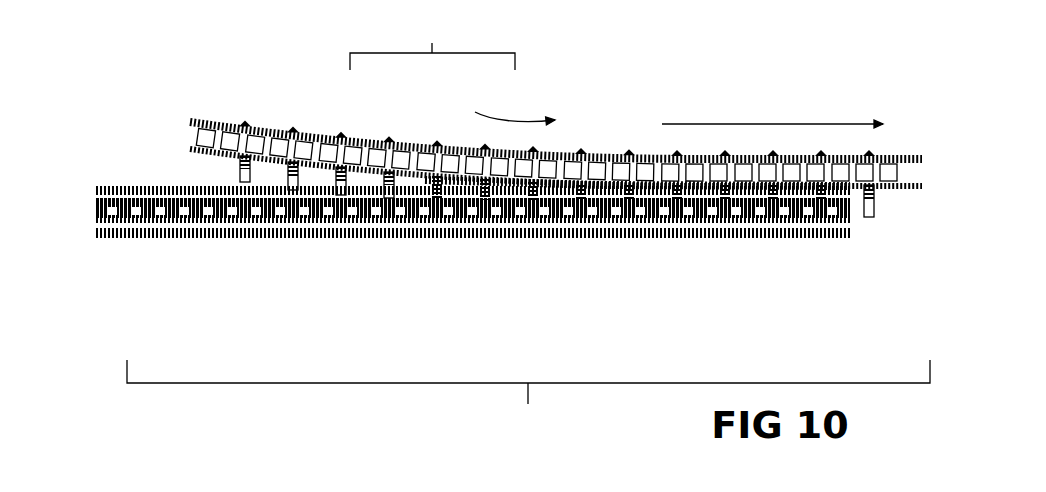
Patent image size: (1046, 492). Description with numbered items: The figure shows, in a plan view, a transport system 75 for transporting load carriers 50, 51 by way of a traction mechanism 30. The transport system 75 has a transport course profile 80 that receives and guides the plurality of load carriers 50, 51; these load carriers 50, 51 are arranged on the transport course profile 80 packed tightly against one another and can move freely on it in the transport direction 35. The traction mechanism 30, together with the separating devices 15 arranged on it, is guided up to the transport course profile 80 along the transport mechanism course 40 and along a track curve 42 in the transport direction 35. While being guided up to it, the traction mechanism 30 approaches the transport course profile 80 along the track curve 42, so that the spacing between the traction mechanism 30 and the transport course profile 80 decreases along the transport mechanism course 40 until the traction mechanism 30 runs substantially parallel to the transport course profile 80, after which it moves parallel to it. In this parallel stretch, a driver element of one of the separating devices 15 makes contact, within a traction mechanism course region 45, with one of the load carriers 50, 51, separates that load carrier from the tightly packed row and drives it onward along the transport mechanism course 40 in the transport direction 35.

The separating device 15 is at (299, 120).
The traction mechanism 30 is at (175, 125).
The transport direction 35 is at (737, 124).
The transport mechanism course 40 is at (513, 311).
The track curve 42 is at (497, 110).
The traction mechanism course region 45 is at (432, 39).
The load carrier 50 is at (378, 220).
The load carrier 51 is at (332, 210).
The transport system 75 is at (137, 68).
The transport course profile 80 is at (227, 232).